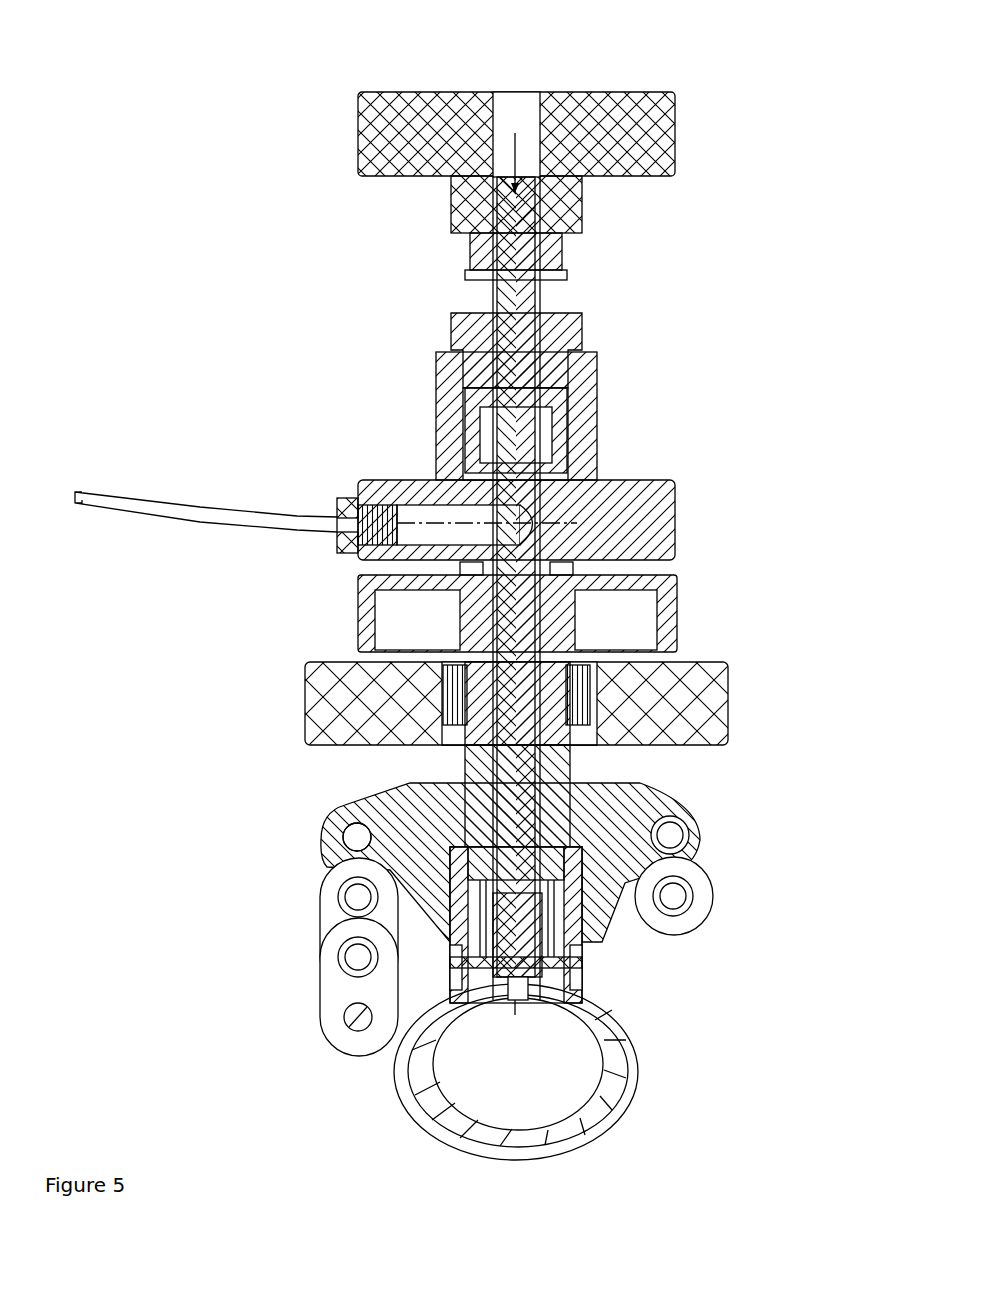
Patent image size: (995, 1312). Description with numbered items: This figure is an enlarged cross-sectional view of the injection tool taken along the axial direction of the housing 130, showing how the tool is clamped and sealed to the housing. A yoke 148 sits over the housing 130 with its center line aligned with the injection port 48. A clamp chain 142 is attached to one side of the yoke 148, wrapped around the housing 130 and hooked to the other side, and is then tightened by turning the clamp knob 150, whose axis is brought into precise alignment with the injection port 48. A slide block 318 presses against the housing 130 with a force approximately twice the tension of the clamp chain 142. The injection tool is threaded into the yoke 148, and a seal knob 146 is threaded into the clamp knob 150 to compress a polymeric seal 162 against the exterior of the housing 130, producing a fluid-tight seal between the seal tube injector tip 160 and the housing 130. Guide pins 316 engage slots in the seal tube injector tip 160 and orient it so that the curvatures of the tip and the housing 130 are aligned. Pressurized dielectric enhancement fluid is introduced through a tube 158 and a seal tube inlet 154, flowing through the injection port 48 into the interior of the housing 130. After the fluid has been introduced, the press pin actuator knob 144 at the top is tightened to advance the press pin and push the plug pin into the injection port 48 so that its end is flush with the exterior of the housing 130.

The press pin actuator knob 144 is at (437, 88).
The seal knob 146 is at (567, 262).
The seal tube inlet 154 is at (592, 465).
The tube 158 is at (227, 515).
The clamp knob 150 is at (303, 680).
The yoke 148 is at (650, 803).
The clamp chain 142 is at (330, 1045).
The slide block 318 is at (323, 870).
The seal tube injector tip 160 is at (480, 945).
The polymeric seal 162 is at (452, 983).
The guide pins 316 is at (583, 957).
The housing 130 is at (637, 1083).
The injection port 48 is at (522, 997).